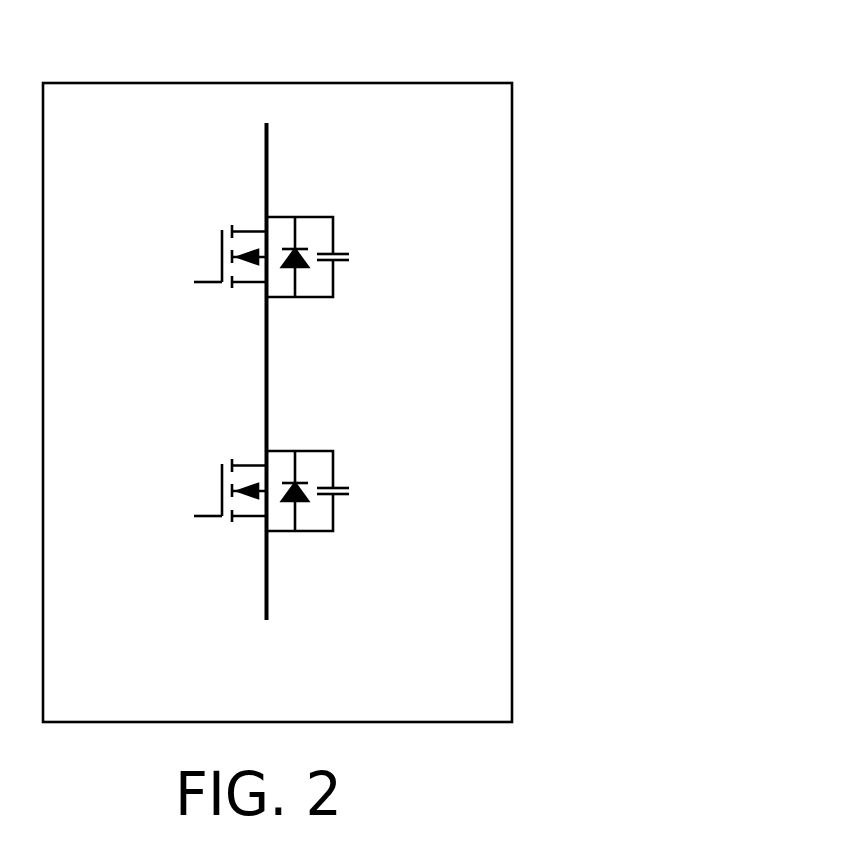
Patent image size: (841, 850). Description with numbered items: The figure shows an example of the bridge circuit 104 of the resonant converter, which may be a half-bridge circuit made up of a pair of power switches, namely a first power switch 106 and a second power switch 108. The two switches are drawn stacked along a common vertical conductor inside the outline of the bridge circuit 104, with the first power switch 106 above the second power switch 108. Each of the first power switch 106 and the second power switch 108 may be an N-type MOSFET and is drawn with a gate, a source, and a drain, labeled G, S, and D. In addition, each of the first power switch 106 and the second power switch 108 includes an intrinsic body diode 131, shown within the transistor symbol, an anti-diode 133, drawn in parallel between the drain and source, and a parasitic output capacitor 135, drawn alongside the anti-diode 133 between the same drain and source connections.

The bridge circuit 104 is at (480, 82).
The first power switch 106 is at (222, 240).
The second power switch 108 is at (222, 480).
The intrinsic body diode 131 is at (247, 252).
The anti-diode 133 is at (296, 256).
The parasitic output capacitor 135 is at (336, 250).